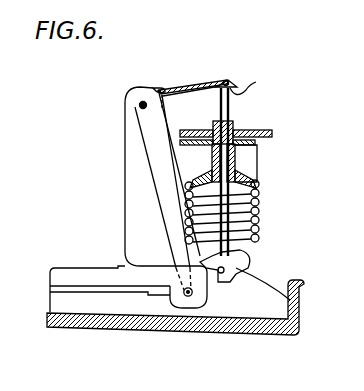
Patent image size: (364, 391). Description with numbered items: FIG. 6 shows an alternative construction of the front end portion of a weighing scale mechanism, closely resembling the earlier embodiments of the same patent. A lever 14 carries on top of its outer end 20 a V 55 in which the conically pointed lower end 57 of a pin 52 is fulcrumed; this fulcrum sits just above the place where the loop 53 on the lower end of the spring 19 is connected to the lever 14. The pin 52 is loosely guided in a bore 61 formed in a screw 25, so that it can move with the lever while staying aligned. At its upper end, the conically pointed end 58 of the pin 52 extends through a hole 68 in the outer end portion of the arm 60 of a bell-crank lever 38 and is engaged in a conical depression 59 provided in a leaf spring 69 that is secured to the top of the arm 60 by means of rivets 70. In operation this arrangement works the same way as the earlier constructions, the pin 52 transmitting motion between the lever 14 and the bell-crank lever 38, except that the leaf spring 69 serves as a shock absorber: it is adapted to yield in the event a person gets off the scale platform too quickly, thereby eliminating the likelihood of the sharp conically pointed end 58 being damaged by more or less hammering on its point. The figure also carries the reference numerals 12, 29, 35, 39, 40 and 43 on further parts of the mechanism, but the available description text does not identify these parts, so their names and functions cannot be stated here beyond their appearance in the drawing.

The housing side wall 12 is at (300, 326).
The lever 14 is at (216, 288).
The spring 19 is at (260, 200).
The outer end of lever 20 is at (287, 298).
The screw 25 is at (258, 160).
The mounting plate 29 is at (273, 134).
The support strip 35 is at (87, 293).
The bell-crank lever 38 is at (158, 190).
The pivot pin 39 is at (187, 297).
The pivot pin 40 is at (140, 107).
The support block 43 is at (84, 278).
The pin 52 is at (231, 105).
The loop 53 is at (223, 273).
The V 55 is at (249, 258).
The conically pointed lower end 57 is at (183, 243).
The conically pointed end 58 is at (215, 86).
The conical depression 59 is at (227, 81).
The arm 60 is at (240, 82).
The bore 61 is at (234, 126).
The hole 68 is at (232, 88).
The leaf spring 69 is at (202, 82).
The rivets 70 is at (180, 88).